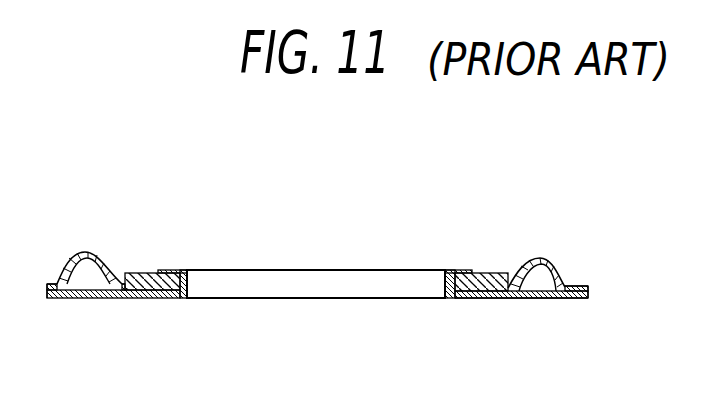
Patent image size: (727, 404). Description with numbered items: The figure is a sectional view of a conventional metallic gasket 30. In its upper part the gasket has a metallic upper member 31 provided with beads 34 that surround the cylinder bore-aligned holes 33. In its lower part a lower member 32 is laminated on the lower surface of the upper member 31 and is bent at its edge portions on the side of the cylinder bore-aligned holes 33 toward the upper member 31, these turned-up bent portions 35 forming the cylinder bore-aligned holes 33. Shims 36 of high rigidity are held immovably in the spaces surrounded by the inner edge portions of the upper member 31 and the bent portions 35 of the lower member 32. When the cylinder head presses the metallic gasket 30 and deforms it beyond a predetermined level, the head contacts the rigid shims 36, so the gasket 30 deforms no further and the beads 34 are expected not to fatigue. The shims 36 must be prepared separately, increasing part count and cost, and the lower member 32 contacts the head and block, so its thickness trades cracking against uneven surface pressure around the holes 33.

The metallic gasket 30 is at (341, 250).
The upper member 31 is at (568, 285).
The lower member 32 is at (553, 297).
The cylinder bore-aligned holes 33 is at (187, 285).
The beads 34 is at (91, 252).
The bent portions 35 is at (183, 269).
The shims 36 is at (153, 274).